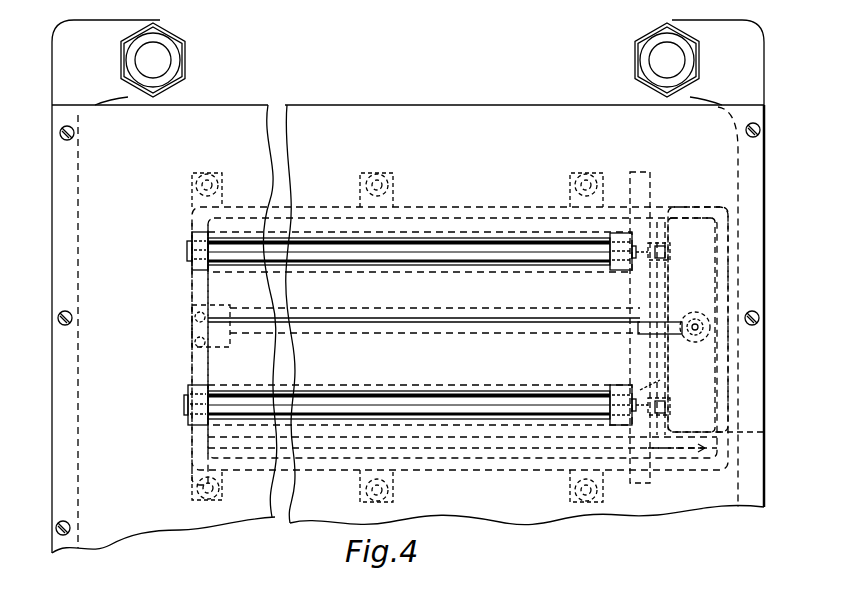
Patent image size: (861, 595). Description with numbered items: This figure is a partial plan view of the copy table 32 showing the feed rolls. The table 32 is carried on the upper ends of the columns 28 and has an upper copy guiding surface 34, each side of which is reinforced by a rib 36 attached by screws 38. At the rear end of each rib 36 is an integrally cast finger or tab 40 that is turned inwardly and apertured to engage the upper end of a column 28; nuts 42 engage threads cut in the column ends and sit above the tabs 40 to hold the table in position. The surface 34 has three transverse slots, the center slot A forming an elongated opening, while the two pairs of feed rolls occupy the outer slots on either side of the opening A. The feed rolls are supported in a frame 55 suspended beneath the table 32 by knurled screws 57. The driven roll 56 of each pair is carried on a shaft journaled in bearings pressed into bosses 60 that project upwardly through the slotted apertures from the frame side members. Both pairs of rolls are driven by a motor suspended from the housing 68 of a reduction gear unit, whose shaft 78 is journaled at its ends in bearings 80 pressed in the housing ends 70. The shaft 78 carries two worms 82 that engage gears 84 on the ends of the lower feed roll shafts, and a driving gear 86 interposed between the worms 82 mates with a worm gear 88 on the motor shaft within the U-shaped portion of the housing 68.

The column 28 is at (165, 62).
The copy table 32 is at (398, 101).
The upper copy guiding surface 34 is at (495, 112).
The rib 36 is at (745, 275).
The screw 38 is at (74, 133).
The finger or tab 40 is at (76, 30).
The nut 42 is at (176, 38).
The frame 55 is at (430, 209).
The driven roll 56 is at (400, 265).
The knurled screw 57 is at (206, 178).
The boss 60 is at (200, 248).
The housing 68 is at (764, 433).
The housing end 70 is at (702, 455).
The shaft 78 is at (668, 382).
The bearing 80 is at (672, 215).
The worm 82 is at (660, 246).
The gear 84 is at (640, 270).
The driving gear 86 is at (662, 318).
The worm gear 88 is at (703, 342).
The center slot A is at (445, 320).